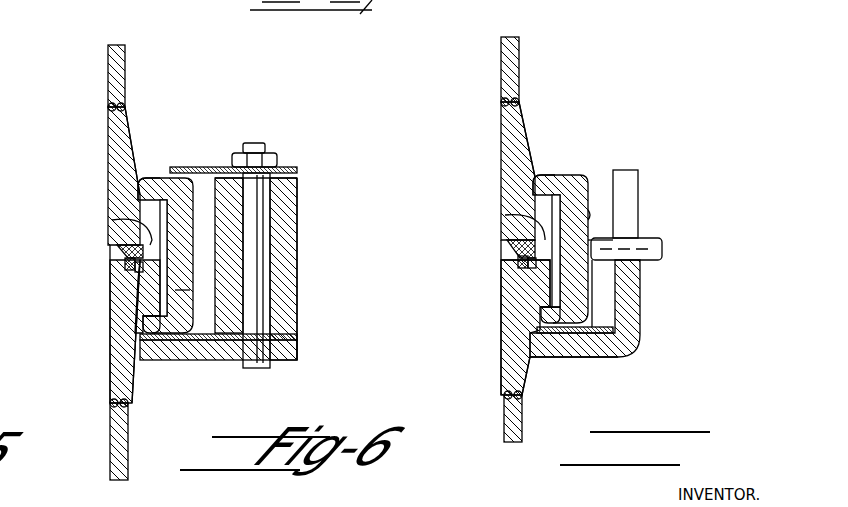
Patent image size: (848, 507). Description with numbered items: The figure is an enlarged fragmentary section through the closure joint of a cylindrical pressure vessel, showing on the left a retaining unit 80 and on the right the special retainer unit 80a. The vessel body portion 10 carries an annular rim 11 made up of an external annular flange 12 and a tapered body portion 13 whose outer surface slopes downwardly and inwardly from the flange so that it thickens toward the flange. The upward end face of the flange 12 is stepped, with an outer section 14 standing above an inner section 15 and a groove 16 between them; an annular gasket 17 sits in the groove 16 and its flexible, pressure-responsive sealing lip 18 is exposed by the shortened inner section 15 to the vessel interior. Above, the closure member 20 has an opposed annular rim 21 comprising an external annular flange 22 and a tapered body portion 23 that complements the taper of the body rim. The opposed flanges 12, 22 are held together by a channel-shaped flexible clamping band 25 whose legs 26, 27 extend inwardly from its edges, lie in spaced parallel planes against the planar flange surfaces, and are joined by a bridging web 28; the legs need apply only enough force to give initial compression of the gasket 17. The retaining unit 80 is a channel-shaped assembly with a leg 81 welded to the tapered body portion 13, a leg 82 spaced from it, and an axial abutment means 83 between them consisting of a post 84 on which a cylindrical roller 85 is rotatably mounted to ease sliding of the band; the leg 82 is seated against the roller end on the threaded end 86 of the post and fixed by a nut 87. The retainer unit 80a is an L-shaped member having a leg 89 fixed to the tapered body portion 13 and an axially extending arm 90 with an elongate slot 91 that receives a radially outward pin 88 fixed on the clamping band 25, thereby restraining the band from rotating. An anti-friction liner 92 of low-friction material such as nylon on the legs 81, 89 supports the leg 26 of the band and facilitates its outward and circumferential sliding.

In FIG. 5, the body portion 10 is at (112, 447).
In FIG. 6, the body portion 10 is at (505, 426).
In FIG. 5, the annular rim 11 is at (108, 348).
In FIG. 6, the annular rim 11 is at (500, 338).
In FIG. 5, the external annular flange 12 is at (158, 268).
In FIG. 6, the external annular flange 12 is at (548, 275).
In FIG. 5, the tapered body portion 13 is at (134, 372).
In FIG. 6, the tapered body portion 13 is at (528, 368).
In FIG. 5, the outer section 14 is at (140, 220).
In FIG. 6, the outer section 14 is at (534, 218).
In FIG. 5, the inner section 15 is at (125, 262).
In FIG. 6, the inner section 15 is at (518, 260).
In FIG. 5, the groove 16 is at (138, 268).
In FIG. 6, the groove 16 is at (530, 265).
In FIG. 5, the gasket 17 is at (165, 245).
In FIG. 6, the gasket 17 is at (562, 270).
In FIG. 5, the sealing lip 18 is at (120, 250).
In FIG. 6, the sealing lip 18 is at (512, 246).
In FIG. 5, the closure member 20 is at (126, 60).
In FIG. 6, the closure member 20 is at (519, 50).
In FIG. 5, the annular rim 21 is at (106, 134).
In FIG. 6, the annular rim 21 is at (500, 136).
In FIG. 5, the external annular flange 22 is at (190, 200).
In FIG. 6, the external annular flange 22 is at (562, 172).
In FIG. 5, the tapered body portion 23 is at (134, 160).
In FIG. 6, the tapered body portion 23 is at (528, 128).
In FIG. 5, the clamping band 25 is at (225, 228).
In FIG. 6, the clamping band 25 is at (592, 295).
In FIG. 5, the leg 26 is at (143, 320).
In FIG. 6, the leg 26 is at (542, 314).
In FIG. 5, the leg 27 is at (142, 194).
In FIG. 6, the leg 27 is at (538, 192).
In FIG. 5, the web 28 is at (183, 293).
In FIG. 6, the web 28 is at (592, 210).
In FIG. 5, the retaining unit 80 is at (300, 190).
In FIG. 6, the retainer unit 80a is at (660, 278).
In FIG. 5, the leg 81 is at (195, 360).
In FIG. 5, the leg 82 is at (196, 166).
In FIG. 5, the abutment means 83 is at (298, 264).
In FIG. 5, the post 84 is at (258, 320).
In FIG. 5, the roller 85 is at (290, 286).
In FIG. 5, the threaded end 86 is at (256, 143).
In FIG. 5, the nut 87 is at (278, 158).
In FIG. 6, the pin 88 is at (662, 248).
In FIG. 6, the leg 89 is at (588, 357).
In FIG. 6, the arm 90 is at (640, 312).
In FIG. 6, the slot 91 is at (638, 200).
In FIG. 5, the anti-friction liner 92 is at (207, 328).
In FIG. 6, the anti-friction liner 92 is at (605, 322).